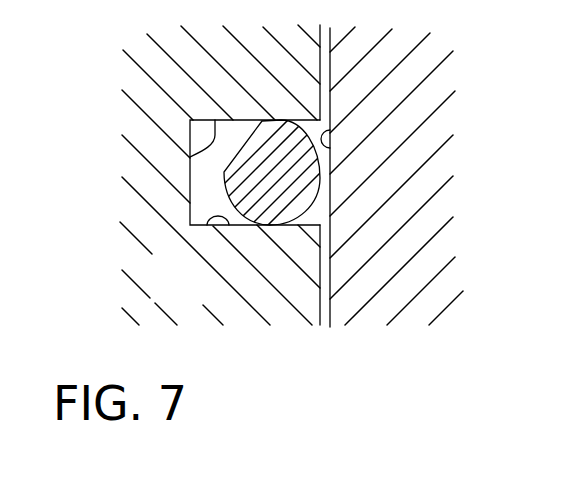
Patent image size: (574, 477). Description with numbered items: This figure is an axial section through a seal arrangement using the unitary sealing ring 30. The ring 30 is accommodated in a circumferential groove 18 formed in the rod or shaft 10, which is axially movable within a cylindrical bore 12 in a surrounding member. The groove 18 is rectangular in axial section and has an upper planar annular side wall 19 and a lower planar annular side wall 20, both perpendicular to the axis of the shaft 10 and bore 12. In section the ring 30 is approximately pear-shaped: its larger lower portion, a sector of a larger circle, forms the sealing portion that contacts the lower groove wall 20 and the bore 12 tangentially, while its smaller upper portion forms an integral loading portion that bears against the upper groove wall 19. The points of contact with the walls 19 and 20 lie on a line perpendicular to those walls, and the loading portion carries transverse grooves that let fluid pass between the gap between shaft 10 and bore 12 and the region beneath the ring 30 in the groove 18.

The shaft 10 is at (205, 295).
The bore 12 is at (333, 148).
The groove 18 is at (190, 204).
The upper side wall 19 is at (190, 157).
The lower side wall 20 is at (222, 226).
The unitary sealing ring 30 is at (298, 200).